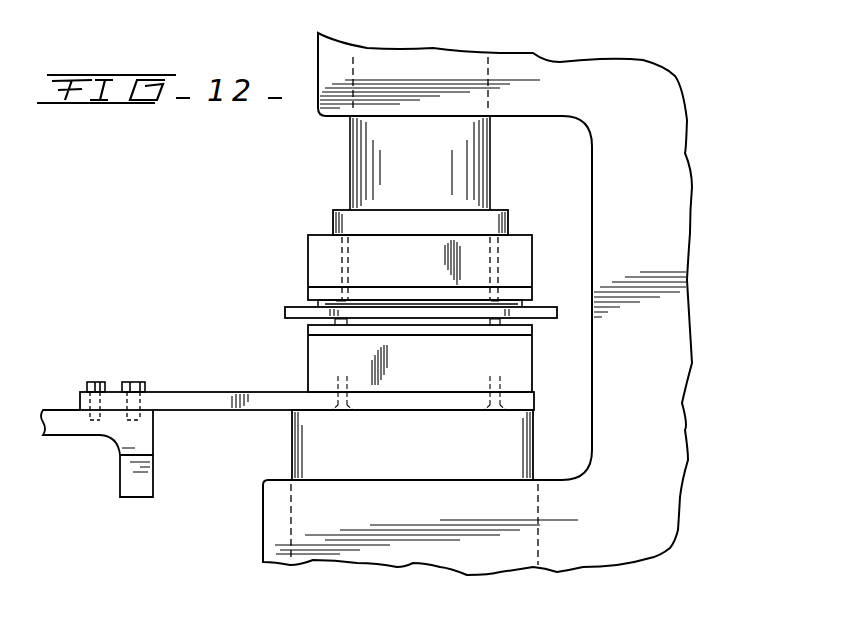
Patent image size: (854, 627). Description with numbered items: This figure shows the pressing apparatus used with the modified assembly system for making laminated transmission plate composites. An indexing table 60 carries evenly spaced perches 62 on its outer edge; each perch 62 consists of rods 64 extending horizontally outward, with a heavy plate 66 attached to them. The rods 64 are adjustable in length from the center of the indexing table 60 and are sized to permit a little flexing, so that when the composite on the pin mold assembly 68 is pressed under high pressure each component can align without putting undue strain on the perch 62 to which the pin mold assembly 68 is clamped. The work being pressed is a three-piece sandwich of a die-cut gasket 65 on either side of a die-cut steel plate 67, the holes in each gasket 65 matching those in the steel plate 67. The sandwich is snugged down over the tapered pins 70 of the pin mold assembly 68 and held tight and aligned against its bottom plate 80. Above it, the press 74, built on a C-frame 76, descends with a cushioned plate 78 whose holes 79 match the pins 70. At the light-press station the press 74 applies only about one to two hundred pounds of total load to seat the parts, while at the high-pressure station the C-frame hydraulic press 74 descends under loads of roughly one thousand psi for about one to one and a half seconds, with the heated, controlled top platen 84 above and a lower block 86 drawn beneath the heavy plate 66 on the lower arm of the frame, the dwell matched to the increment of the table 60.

The indexing table 60 is at (120, 470).
The perch 62 is at (57, 397).
The rod 64 is at (214, 411).
The die-cut gasket 65 is at (525, 300).
The heavy plate 66 is at (310, 373).
The die-cut steel plate 67 is at (530, 305).
The pin mold assembly 68 is at (223, 311).
The pin 70 is at (500, 285).
The press 74 is at (708, 206).
The C-frame 76 is at (619, 68).
The cushioned plate 78 is at (308, 295).
The holes 79 is at (340, 266).
The bottom plate 80 is at (294, 319).
The top platen 84 is at (308, 252).
The support block 86 is at (517, 452).